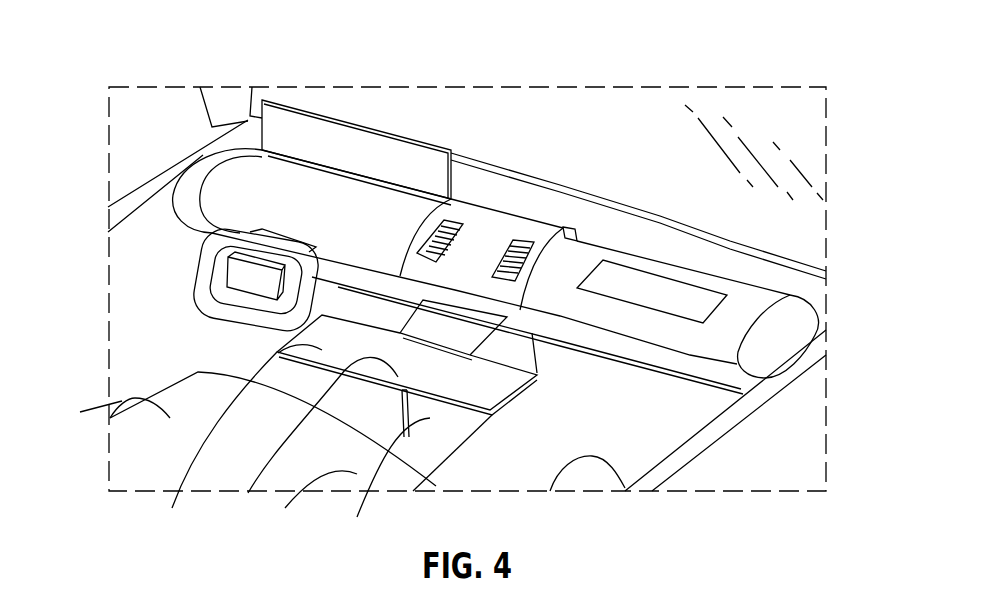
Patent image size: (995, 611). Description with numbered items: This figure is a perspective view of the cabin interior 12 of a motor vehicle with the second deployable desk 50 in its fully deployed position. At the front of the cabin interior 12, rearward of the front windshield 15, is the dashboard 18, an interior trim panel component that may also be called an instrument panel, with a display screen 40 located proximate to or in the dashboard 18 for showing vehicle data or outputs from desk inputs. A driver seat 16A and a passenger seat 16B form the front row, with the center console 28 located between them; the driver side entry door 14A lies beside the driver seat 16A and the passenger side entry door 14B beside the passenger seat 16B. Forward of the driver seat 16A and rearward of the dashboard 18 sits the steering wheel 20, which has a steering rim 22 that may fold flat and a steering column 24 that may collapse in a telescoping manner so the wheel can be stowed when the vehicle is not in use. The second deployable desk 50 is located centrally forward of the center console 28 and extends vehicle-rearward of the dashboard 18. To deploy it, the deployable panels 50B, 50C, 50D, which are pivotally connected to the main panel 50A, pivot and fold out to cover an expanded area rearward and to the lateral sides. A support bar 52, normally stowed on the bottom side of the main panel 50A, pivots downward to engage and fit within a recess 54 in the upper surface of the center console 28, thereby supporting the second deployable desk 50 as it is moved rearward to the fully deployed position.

The cabin interior 12 is at (143, 338).
The driver side entry door 14A is at (202, 146).
The passenger side entry door 14B is at (762, 393).
The front windshield 15 is at (743, 125).
The driver seat 16A is at (107, 415).
The passenger seat 16B is at (480, 445).
The dashboard 18 is at (508, 227).
The steering wheel 20 is at (194, 227).
The steering rim 22 is at (188, 279).
The steering column 24 is at (247, 279).
The center console 28 is at (311, 503).
The display screen 40 is at (378, 152).
The second deployable desk 50 is at (496, 258).
The main panel 50A is at (548, 232).
The deployable panel 50B is at (331, 366).
The deployable panel 50C is at (212, 447).
The deployable panel 50D is at (537, 375).
The support bar 52 is at (381, 480).
The recess 54 is at (430, 418).